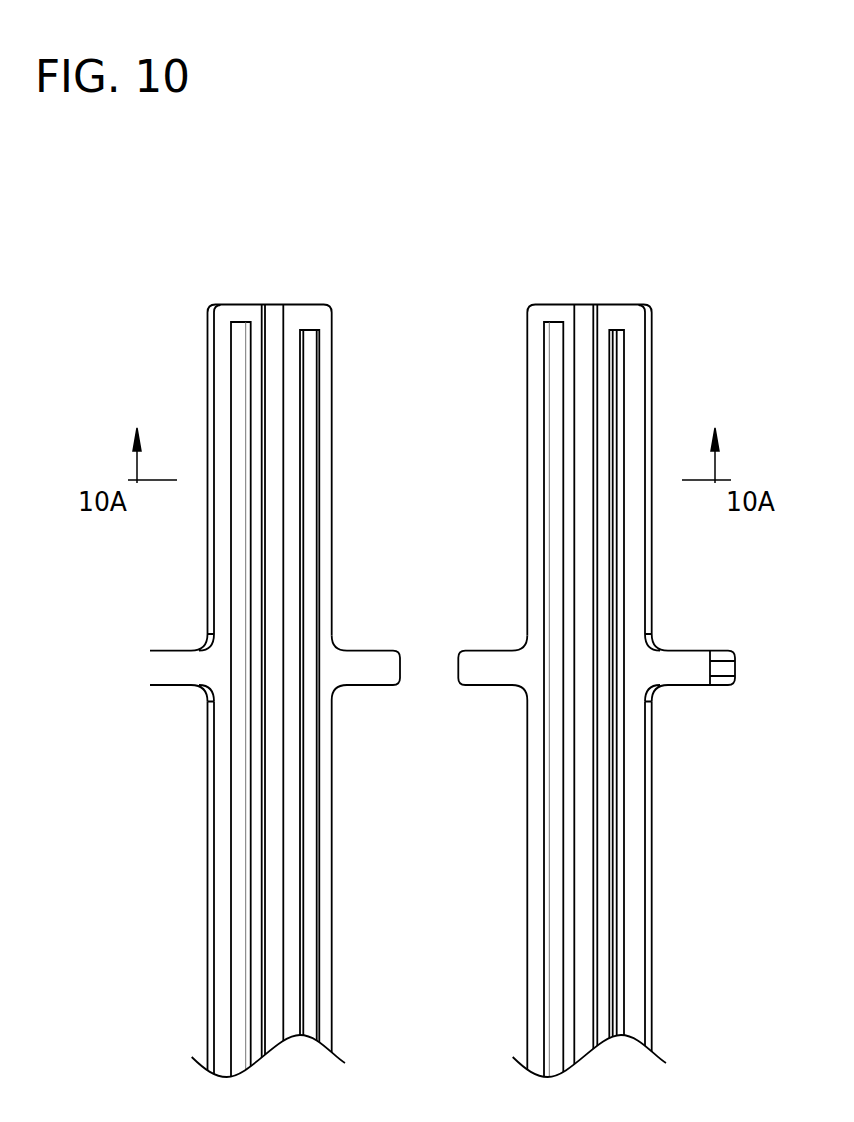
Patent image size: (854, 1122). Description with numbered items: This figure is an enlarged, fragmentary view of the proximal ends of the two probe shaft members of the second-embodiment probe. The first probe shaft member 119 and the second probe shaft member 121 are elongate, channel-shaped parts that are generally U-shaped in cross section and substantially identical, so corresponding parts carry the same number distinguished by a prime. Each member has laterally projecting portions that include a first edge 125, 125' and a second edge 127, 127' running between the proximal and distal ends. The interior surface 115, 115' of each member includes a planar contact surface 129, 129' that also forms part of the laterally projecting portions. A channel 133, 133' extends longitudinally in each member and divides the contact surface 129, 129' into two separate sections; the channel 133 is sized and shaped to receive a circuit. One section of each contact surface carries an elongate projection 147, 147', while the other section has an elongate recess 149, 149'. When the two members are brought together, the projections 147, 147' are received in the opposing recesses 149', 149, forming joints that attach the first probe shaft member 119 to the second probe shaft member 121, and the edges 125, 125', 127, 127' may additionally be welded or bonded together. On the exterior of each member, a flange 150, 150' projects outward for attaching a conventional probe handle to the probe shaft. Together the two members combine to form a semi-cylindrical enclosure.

The first probe shaft member 119 is at (618, 661).
The second probe shaft member 121 is at (233, 672).
The elongate recess 149 is at (489, 711).
The elongate recess 149' is at (159, 711).
The elongate projection 147 is at (686, 715).
The elongate projection 147' is at (377, 715).
The interior surface 115 is at (672, 703).
The interior surface 115' is at (188, 703).
The planar contact surface 129 is at (700, 702).
The planar contact surface 129' is at (143, 702).
The flange 150 is at (746, 653).
The flange 150' is at (101, 643).
The first edge 125 is at (472, 900).
The first edge 125' is at (383, 900).
The channel 133 is at (502, 703).
The channel 133' is at (353, 703).
The second edge 127 is at (710, 901).
The second edge 127' is at (140, 901).